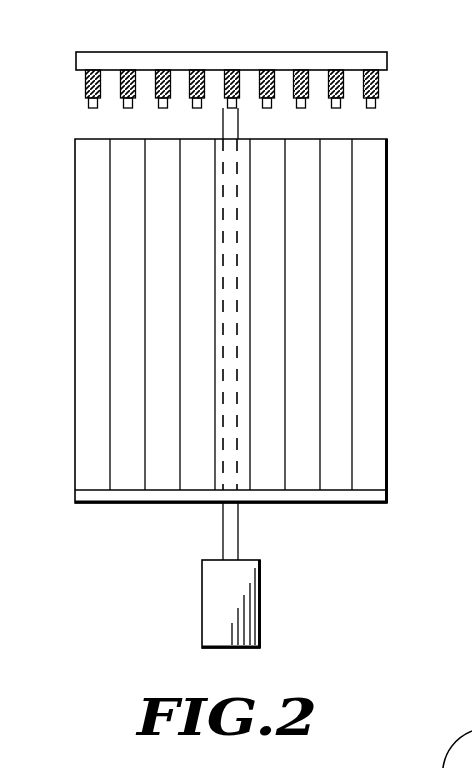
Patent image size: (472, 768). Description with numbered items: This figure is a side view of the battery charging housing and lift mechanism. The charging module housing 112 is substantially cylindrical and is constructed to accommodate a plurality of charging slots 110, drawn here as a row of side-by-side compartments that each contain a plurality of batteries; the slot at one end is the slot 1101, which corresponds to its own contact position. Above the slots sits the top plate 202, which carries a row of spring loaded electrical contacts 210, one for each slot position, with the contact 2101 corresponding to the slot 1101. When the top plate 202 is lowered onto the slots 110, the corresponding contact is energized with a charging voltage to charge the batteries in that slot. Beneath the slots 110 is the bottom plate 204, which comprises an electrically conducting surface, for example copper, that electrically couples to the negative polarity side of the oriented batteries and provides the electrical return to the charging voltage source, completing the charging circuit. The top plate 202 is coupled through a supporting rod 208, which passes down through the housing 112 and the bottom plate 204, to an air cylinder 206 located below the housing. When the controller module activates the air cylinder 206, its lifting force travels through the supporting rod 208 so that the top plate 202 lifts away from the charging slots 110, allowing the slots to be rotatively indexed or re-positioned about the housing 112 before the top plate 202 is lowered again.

The charging module housing 112 is at (96, 27).
The top plate 202 is at (353, 53).
The spring loaded electrical contacts 210 is at (85, 85).
The spring loaded electrical contact 2101 is at (379, 85).
The charging slots 110 is at (73, 479).
The charging slot 1101 is at (388, 155).
The bottom plate 204 is at (95, 508).
The supporting rod 208 is at (222, 546).
The air cylinder 206 is at (261, 575).